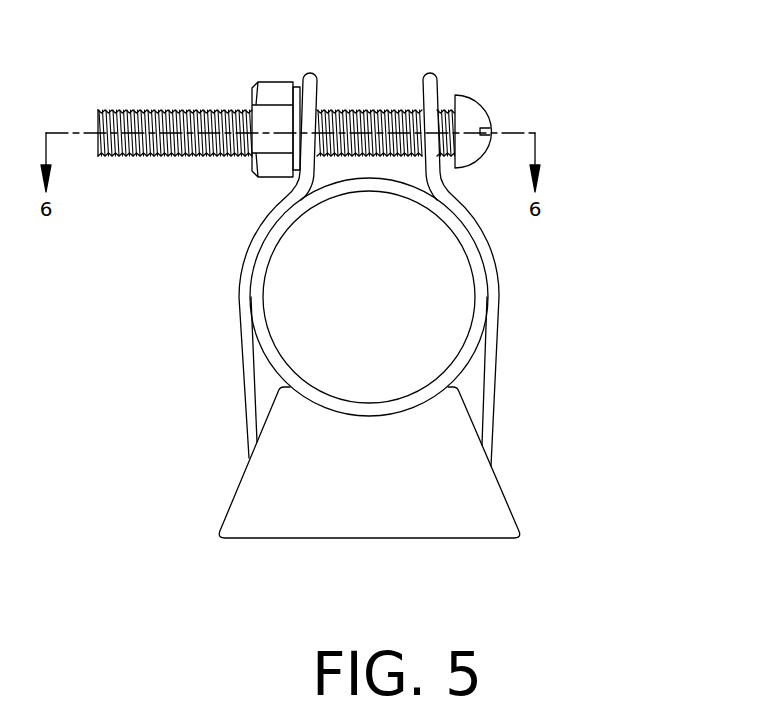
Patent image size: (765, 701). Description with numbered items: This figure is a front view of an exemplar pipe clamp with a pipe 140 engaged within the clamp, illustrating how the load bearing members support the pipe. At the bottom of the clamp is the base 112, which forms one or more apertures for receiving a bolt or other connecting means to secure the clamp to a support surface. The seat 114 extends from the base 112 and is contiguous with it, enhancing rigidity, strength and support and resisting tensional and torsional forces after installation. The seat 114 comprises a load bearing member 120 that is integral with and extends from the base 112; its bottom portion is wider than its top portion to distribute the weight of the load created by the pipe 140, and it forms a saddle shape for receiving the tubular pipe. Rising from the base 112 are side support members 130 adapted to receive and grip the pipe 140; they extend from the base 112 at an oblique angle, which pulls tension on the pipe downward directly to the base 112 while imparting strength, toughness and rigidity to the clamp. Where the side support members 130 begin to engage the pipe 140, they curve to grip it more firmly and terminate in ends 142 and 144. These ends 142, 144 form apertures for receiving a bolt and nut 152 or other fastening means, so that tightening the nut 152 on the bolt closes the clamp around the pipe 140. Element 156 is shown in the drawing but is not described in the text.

The base 112 is at (440, 540).
The seat 114 is at (505, 492).
The load bearing member 120 is at (367, 418).
The side support member 130 is at (243, 362).
The pipe 140 is at (482, 282).
The end 142 is at (315, 97).
The end 144 is at (432, 94).
The nut 152 is at (271, 92).
The second tab 156 is at (378, 120).